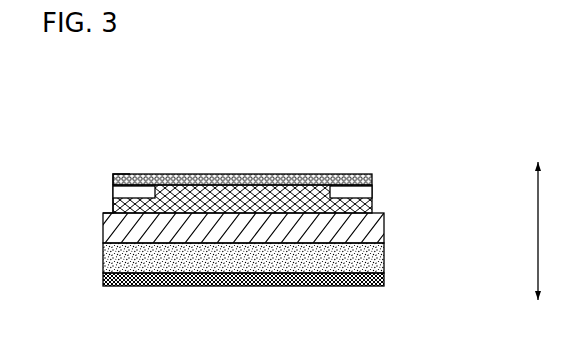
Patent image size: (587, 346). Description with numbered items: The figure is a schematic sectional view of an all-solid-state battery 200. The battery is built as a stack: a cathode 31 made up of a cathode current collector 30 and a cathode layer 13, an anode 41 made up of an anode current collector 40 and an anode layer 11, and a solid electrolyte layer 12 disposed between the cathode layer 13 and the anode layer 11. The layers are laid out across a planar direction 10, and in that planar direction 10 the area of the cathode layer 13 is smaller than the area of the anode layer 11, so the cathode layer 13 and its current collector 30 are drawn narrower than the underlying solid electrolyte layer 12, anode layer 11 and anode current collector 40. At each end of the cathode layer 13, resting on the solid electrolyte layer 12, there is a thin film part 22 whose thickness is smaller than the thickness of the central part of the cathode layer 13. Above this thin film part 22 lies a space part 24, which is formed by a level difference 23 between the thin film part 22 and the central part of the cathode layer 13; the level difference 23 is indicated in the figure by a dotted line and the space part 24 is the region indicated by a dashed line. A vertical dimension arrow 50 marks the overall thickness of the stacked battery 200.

The all-solid-state battery 200 is at (116, 113).
The planar direction 10 is at (103, 297).
The anode layer 11 is at (371, 250).
The solid electrolyte layer 12 is at (385, 217).
The anode current collector 40 is at (385, 273).
The anode 41 is at (450, 238).
The cathode layer 13 is at (334, 190).
The cathode current collector 30 is at (372, 175).
The cathode 31 is at (441, 152).
The thin film part 22 is at (105, 213).
The level difference 23 is at (125, 178).
The space part 24 is at (113, 191).
The total thickness 50 is at (538, 215).